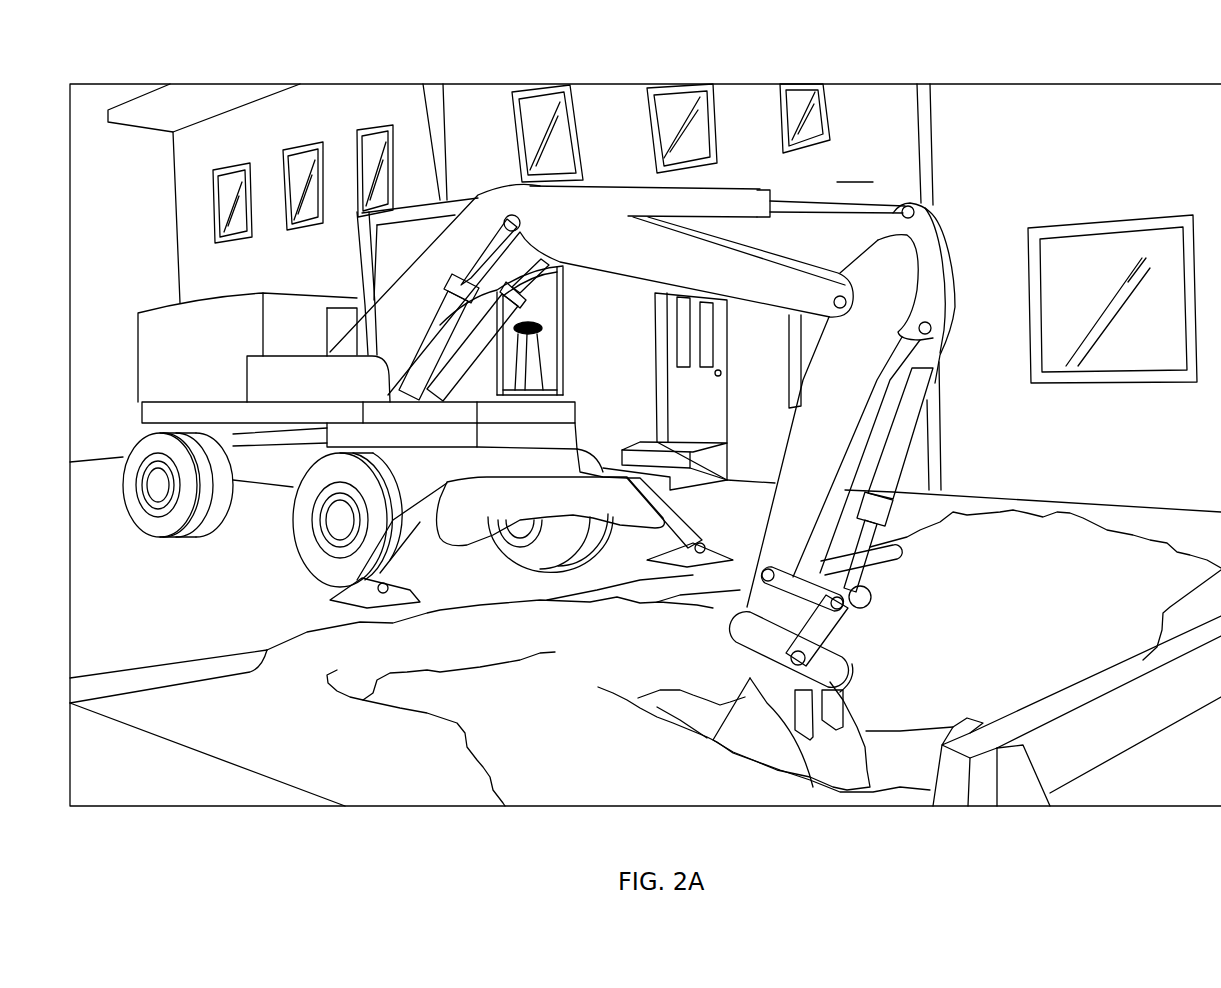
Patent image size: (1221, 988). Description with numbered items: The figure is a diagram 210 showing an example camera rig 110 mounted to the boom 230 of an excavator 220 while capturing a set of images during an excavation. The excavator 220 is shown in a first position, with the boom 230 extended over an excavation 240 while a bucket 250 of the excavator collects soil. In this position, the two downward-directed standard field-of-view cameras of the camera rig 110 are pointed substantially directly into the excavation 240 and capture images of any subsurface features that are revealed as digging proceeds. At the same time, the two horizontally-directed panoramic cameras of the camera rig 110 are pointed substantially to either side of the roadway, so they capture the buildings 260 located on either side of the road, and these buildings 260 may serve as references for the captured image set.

The diagram 210 is at (1070, 72).
The excavator 220 is at (168, 318).
The boom 230 is at (600, 273).
The camera rig 110 is at (733, 304).
The buildings 260 is at (645, 298).
The excavation 240 is at (1048, 543).
The bucket 250 is at (852, 752).